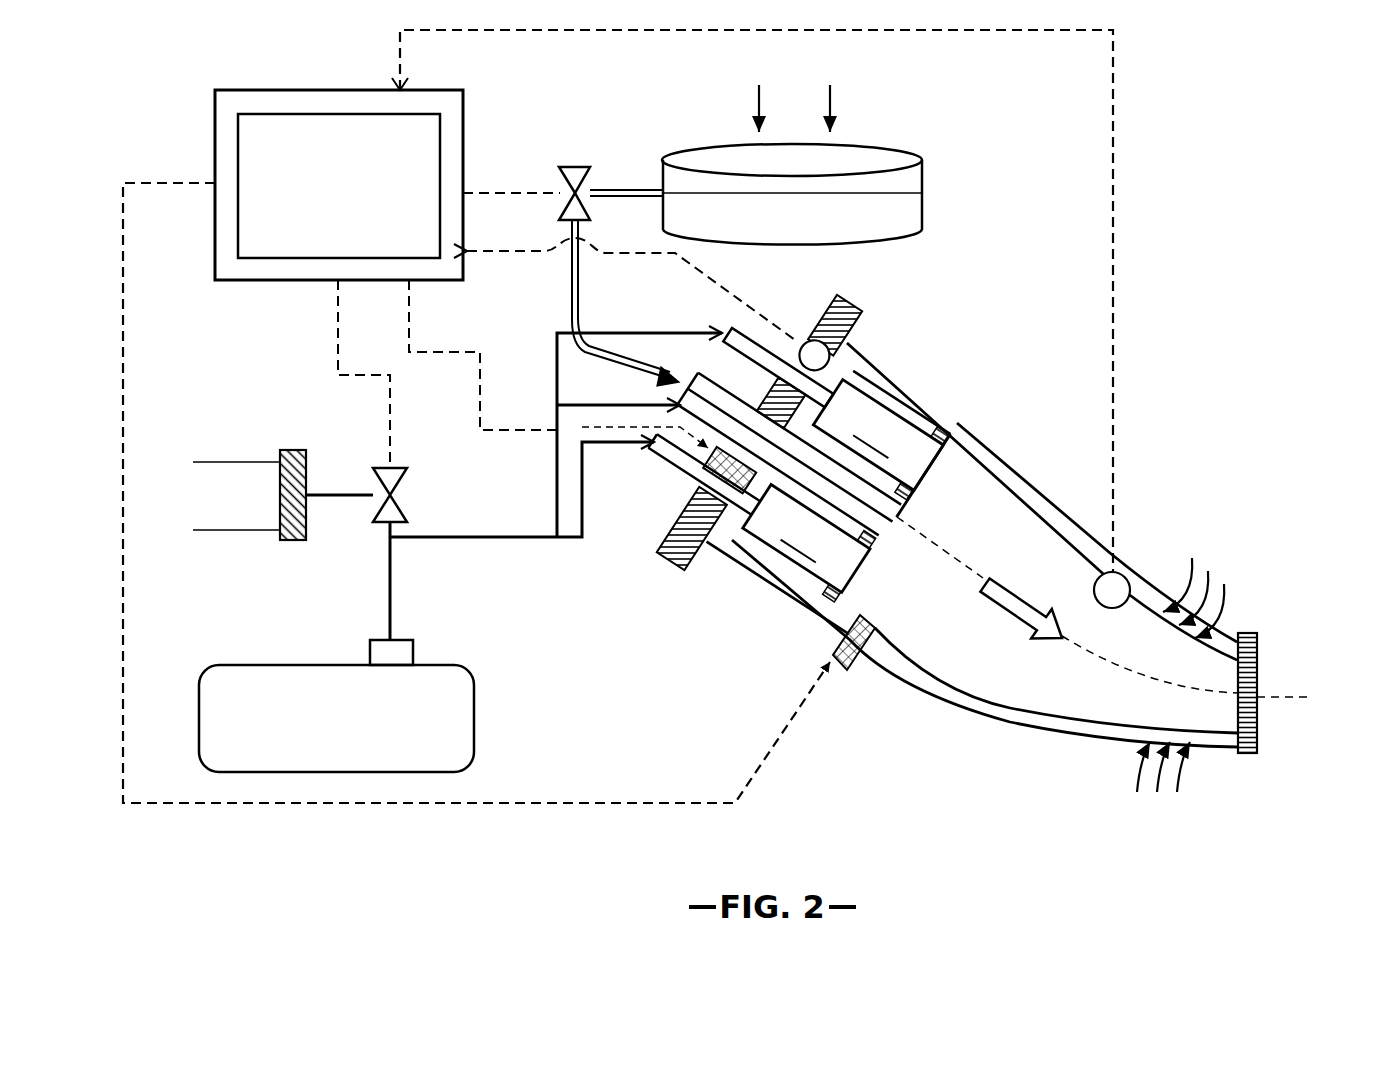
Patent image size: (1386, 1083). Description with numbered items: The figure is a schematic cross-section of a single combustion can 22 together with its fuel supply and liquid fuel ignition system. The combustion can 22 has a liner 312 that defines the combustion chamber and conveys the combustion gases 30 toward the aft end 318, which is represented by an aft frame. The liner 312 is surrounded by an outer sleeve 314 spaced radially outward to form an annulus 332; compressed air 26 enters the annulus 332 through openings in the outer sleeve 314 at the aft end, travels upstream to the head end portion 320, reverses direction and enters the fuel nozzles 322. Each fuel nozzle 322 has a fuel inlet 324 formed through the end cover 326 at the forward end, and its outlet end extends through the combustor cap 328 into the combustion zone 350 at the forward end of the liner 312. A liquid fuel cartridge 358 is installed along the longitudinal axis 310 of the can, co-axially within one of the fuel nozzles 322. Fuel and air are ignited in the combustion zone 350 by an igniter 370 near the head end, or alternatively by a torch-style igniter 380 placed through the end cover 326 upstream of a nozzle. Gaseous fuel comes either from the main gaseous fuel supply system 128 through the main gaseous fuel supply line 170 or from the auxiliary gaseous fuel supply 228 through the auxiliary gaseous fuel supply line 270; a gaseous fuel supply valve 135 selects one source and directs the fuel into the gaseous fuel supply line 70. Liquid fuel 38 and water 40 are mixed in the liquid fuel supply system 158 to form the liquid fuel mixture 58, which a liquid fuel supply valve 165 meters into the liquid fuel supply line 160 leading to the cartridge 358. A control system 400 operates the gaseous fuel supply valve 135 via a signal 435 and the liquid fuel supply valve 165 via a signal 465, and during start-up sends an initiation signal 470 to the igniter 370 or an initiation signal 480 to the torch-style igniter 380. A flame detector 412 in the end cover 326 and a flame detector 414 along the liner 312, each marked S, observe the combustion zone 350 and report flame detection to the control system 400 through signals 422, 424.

The combustion can 22 is at (940, 337).
The compressed working fluid 26 is at (1236, 608).
The combustion gases 30 is at (1008, 592).
The liquid fuel 38 is at (759, 108).
The water 40 is at (830, 108).
The liquid fuel mixture 58 is at (922, 220).
The gaseous fuel supply line 70 is at (515, 537).
The main gaseous fuel supply system 128 is at (212, 462).
The gaseous fuel supply valve 135 is at (400, 470).
The liquid fuel supply system 158 is at (922, 148).
The liquid fuel supply line 160 is at (578, 320).
The liquid fuel supply valve 165 is at (575, 167).
The main gaseous fuel supply line 170 is at (356, 494).
The auxiliary gaseous fuel supply 228 is at (246, 665).
The auxiliary gaseous fuel supply line 270 is at (390, 615).
The longitudinal axis 310 is at (1282, 697).
The liner 312 is at (935, 678).
The outer sleeve 314 is at (1013, 468).
The aft end 318 is at (1258, 647).
The head end portion 320 is at (782, 570).
The fuel nozzles 322 is at (843, 486).
The fuel inlet 324 is at (655, 450).
The end cover 326 is at (662, 560).
The combustor cap 328 is at (962, 408).
The annulus 332 is at (1020, 715).
The combustion zone 350 is at (958, 573).
The liquid fuel cartridge 358 is at (903, 500).
The igniter 370 is at (840, 652).
The torch-style igniter 380 is at (705, 488).
The control system 400 is at (266, 90).
The flame detector 412 is at (805, 330).
The flame detector 414 is at (1125, 578).
The signal 422 is at (540, 262).
The signal 424 is at (1113, 352).
The signal 435 is at (338, 375).
The signal 465 is at (560, 193).
The initiation signal 470 is at (565, 803).
The initiation signal 480 is at (420, 352).